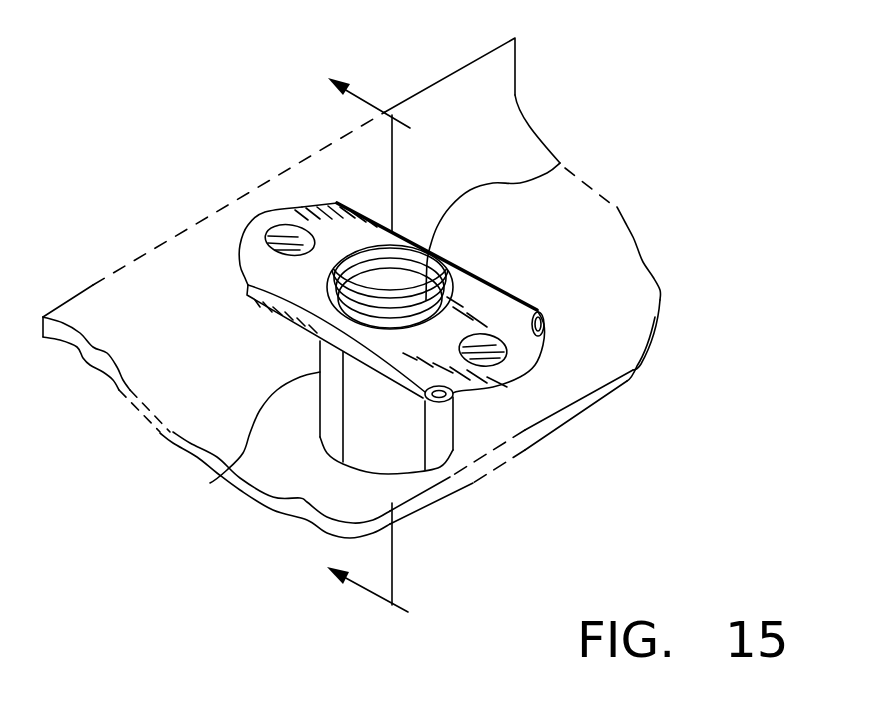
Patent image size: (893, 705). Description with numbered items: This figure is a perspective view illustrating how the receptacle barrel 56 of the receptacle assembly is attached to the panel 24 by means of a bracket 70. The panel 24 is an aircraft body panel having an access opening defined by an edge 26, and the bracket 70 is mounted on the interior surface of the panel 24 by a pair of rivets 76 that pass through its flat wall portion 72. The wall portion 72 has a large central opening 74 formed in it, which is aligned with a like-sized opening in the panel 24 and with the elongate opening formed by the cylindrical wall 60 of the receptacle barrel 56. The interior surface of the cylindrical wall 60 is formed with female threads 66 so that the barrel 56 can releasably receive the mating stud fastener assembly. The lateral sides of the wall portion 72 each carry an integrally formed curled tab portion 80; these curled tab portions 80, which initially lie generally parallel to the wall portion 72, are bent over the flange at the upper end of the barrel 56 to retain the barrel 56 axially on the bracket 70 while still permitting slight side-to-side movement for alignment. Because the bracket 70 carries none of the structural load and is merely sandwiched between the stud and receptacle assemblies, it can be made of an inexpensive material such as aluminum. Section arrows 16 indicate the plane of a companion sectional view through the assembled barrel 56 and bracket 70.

The section line 16- 16 is at (396, 359).
The panel 24 is at (517, 95).
The edge 26 is at (593, 400).
The receptacle barrel 56 is at (210, 483).
The cylindrical wall 60 is at (340, 443).
The female threads 66 is at (560, 163).
The bracket 70 is at (247, 295).
The wall portion 72 is at (347, 200).
The large central opening 74 is at (443, 307).
The rivets 76 is at (285, 236).
The curled tab portion 80 is at (452, 398).